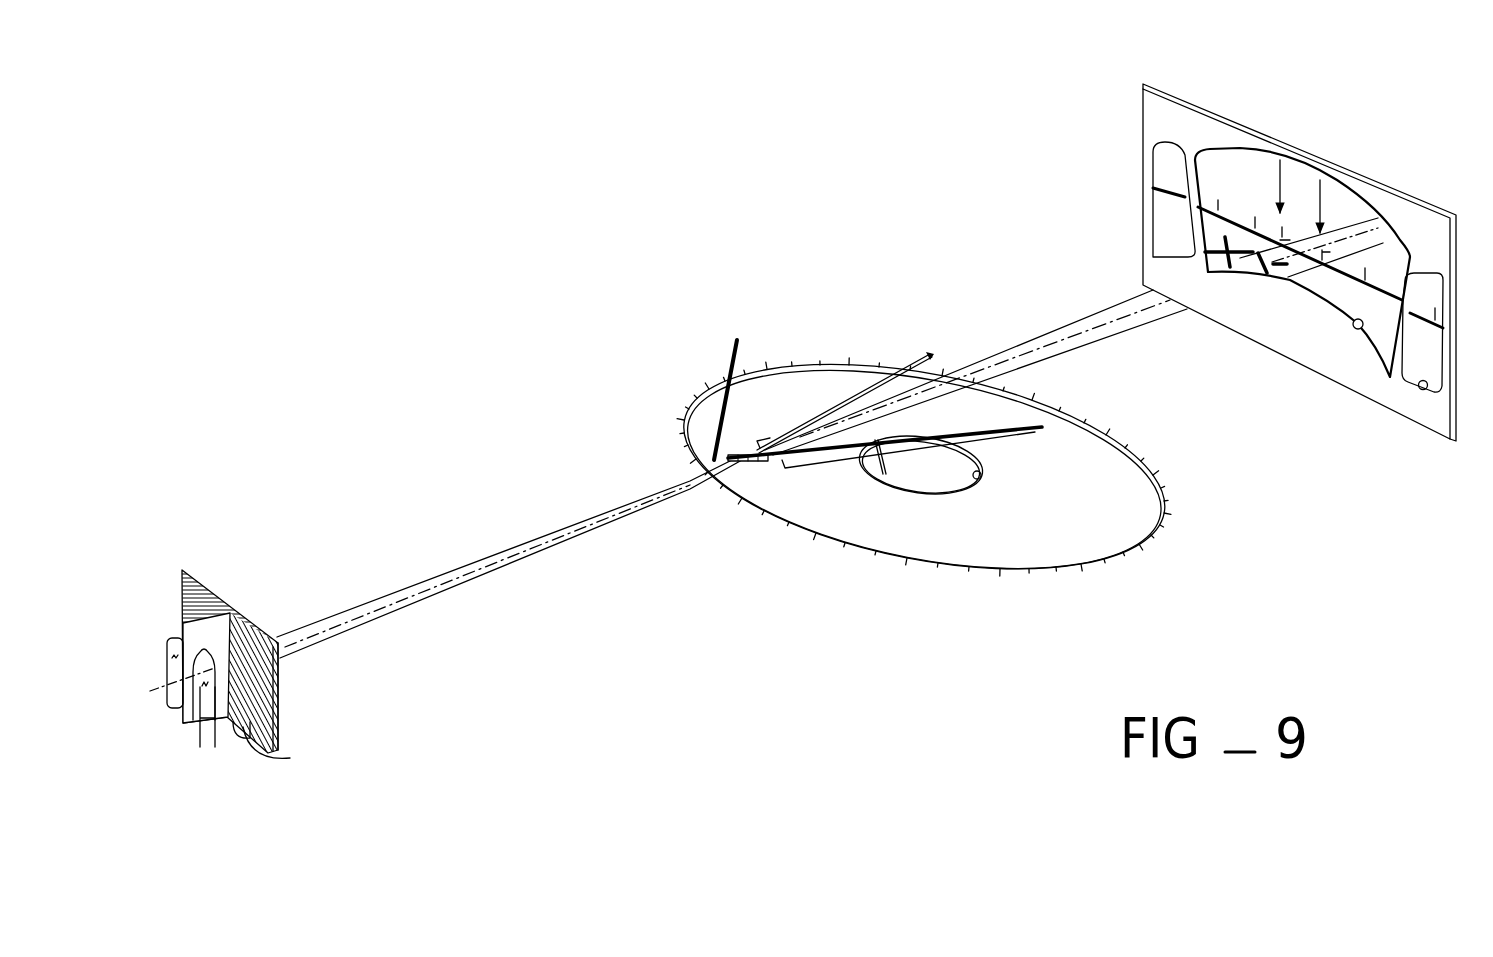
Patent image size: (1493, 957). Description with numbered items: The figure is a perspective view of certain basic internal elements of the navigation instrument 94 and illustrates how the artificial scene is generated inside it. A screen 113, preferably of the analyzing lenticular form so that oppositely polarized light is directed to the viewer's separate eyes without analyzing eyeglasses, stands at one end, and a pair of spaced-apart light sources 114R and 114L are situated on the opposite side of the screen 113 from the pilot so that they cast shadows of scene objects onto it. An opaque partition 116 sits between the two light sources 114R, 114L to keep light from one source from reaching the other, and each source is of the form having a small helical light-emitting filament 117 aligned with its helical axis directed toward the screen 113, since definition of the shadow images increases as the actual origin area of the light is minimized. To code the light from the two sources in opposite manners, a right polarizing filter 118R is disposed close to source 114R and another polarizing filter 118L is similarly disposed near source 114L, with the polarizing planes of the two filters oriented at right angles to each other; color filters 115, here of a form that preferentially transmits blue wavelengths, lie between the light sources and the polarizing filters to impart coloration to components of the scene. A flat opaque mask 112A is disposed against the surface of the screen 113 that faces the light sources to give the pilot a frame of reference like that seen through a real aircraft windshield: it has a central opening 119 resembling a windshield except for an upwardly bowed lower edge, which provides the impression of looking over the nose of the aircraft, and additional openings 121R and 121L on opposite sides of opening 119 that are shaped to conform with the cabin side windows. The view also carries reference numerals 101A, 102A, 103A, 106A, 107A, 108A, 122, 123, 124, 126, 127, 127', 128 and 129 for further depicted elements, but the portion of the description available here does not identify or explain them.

The navigation instrument 94 is at (688, 210).
The light beam 101A is at (790, 413).
The dial disk 102A is at (1100, 507).
The disk scale 103A is at (828, 537).
The disk lettering scale 106A is at (1007, 571).
The pointer arm 107A is at (733, 342).
The reference line 108A is at (1002, 433).
The flat opaque mask 112A is at (1376, 406).
The screen 113 is at (1458, 432).
The left light source 114L is at (173, 647).
The right light source 114R is at (213, 727).
The color filters 115 is at (247, 755).
The opaque partition 116 is at (217, 637).
The helical light-emitting filament 117 is at (195, 692).
The left polarizing filter 118L is at (210, 585).
The right polarizing filter 118R is at (285, 678).
The central opening 119 is at (1358, 330).
The left side opening 121L is at (1423, 392).
The right side opening 121R is at (1173, 256).
The disk rim 122 is at (1107, 560).
The pivot ring 123 is at (988, 469).
The disk edge 124 is at (771, 518).
The disk graduations 126 is at (1131, 450).
The mirror 127 is at (770, 375).
The mirror pivot 127' is at (717, 514).
The pivot pin 128 is at (882, 460).
The reflected light beams 129 is at (930, 355).